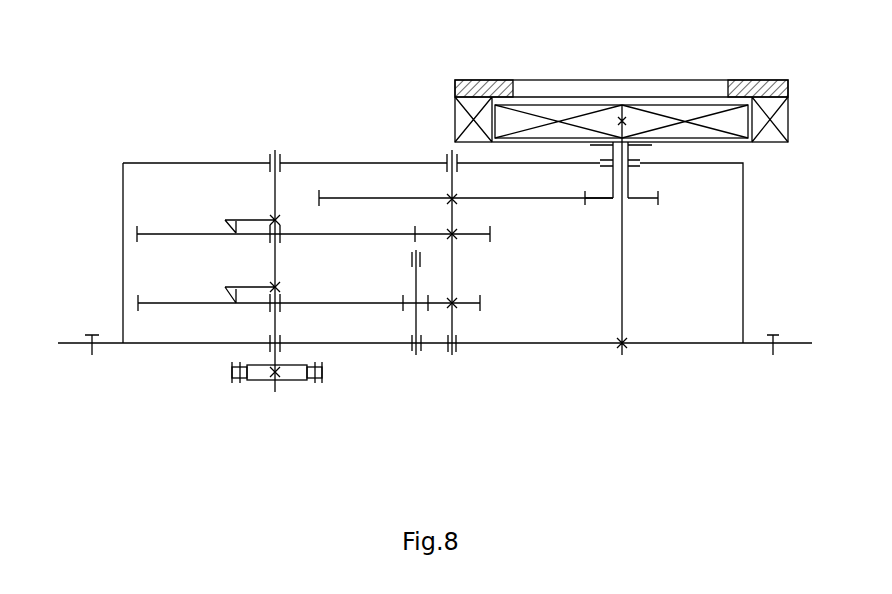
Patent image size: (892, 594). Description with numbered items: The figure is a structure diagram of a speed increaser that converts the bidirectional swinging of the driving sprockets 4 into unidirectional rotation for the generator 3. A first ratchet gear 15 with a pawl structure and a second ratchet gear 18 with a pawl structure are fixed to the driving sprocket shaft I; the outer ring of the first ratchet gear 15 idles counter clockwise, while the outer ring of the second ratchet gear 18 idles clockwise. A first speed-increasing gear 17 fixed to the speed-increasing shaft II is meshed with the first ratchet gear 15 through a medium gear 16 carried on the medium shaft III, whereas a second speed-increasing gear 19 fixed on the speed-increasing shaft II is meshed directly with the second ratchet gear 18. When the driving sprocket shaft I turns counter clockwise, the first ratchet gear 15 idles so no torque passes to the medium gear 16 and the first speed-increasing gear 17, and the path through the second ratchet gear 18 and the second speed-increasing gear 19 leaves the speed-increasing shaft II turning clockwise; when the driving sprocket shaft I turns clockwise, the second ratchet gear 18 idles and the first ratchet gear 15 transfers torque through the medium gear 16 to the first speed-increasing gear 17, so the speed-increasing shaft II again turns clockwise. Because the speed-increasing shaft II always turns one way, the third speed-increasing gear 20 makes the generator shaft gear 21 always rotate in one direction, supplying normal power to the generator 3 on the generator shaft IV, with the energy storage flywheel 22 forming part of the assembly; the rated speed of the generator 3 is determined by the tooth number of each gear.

The generator 3 is at (620, 74).
The driving sprockets 4 is at (290, 372).
The first ratchet gear 15 is at (177, 303).
The medium gear 16 is at (410, 303).
The first speed-increasing gear 17 is at (463, 303).
The second ratchet gear 18 is at (173, 233).
The second speed-increasing gear 19 is at (428, 234).
The third speed-increasing gear 20 is at (425, 198).
The generator shaft gear 21 is at (601, 198).
The energy storage flywheel 22 is at (745, 90).
The driving sprocket shaft I is at (276, 389).
The speed-increasing shaft II is at (452, 348).
The medium shaft III is at (416, 350).
The generator shaft IV is at (625, 352).